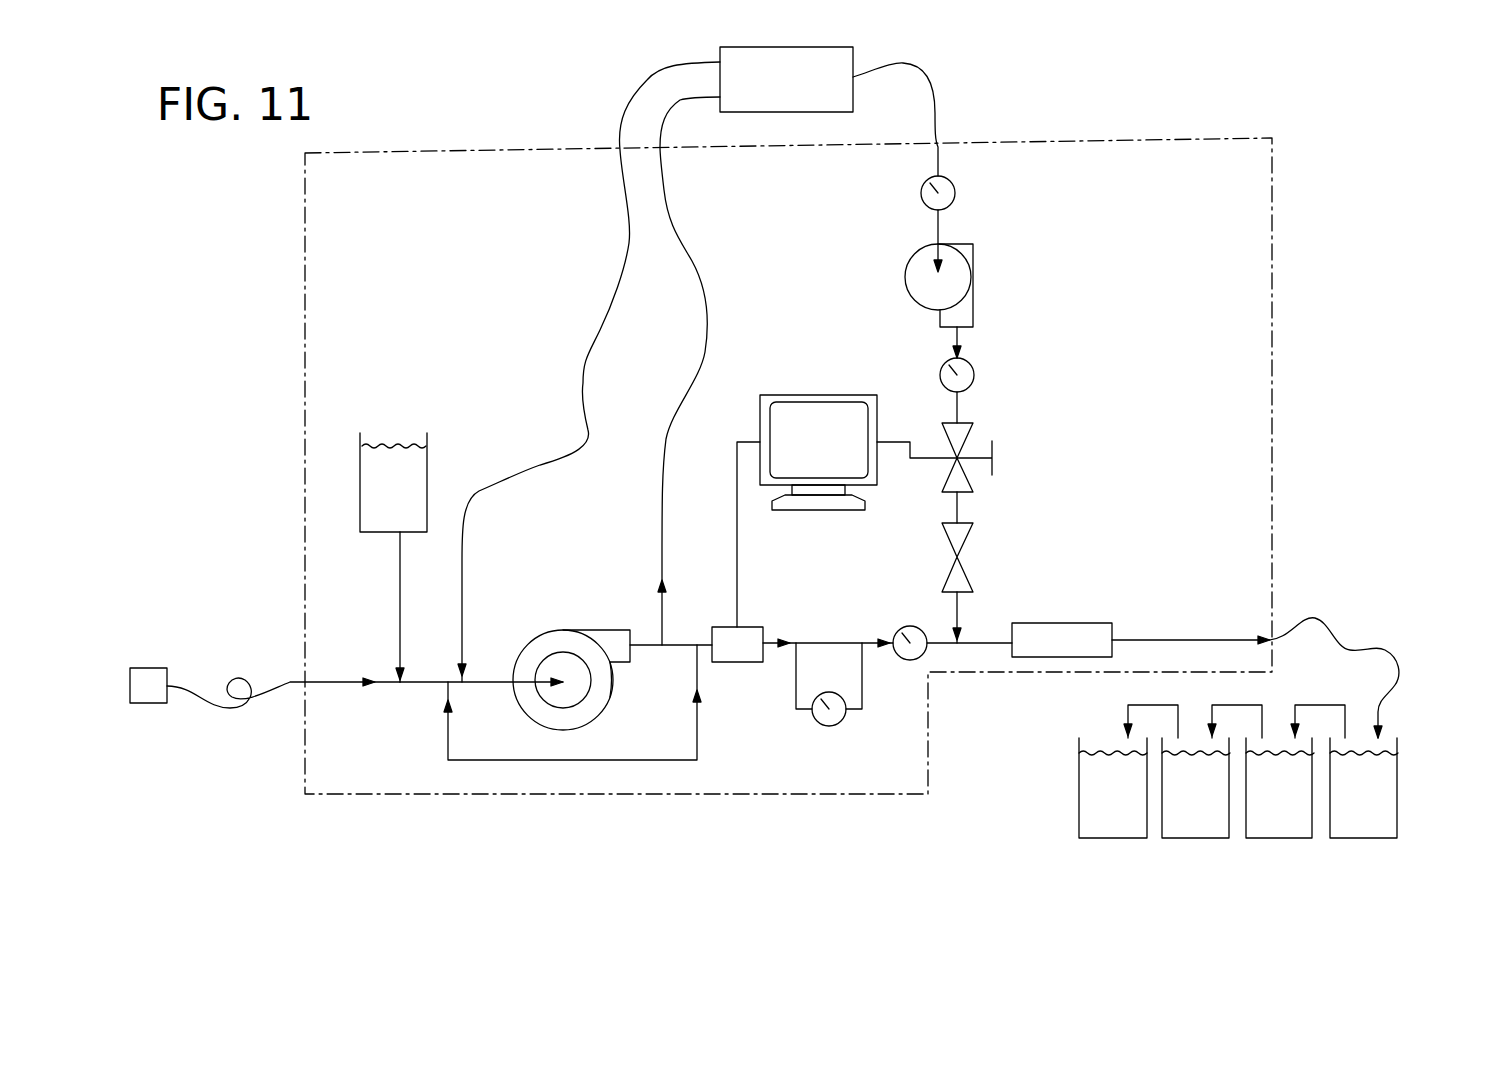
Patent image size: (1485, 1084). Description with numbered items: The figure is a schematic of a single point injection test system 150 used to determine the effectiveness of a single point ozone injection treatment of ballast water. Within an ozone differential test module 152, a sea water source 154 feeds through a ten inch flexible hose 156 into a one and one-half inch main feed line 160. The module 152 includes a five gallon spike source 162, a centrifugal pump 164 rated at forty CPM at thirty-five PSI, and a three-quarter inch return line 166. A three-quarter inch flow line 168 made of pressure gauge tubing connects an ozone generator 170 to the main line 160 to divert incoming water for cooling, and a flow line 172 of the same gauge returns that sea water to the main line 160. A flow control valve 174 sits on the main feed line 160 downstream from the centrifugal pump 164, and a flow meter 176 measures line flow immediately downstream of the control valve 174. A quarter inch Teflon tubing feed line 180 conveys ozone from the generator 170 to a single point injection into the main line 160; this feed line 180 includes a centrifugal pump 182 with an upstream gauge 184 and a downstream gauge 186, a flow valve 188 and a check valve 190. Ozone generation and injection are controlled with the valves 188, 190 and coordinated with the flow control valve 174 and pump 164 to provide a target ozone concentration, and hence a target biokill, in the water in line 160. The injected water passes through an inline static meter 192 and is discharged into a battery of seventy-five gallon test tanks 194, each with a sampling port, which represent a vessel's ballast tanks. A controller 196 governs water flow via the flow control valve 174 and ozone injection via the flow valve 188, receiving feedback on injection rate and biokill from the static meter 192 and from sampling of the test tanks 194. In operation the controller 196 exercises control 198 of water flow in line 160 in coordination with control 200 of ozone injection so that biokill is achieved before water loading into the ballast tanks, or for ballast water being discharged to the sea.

The single point injection test system 150 is at (1110, 117).
The ozone differential test module 152 is at (1272, 237).
The sea water source 154 is at (148, 703).
The flexible hose 156 is at (290, 682).
The main feed line 160 is at (388, 684).
The spike source 162 is at (360, 488).
The centrifugal pump 164 is at (568, 630).
The return line 166 is at (696, 738).
The flow line 168 is at (616, 291).
The ozone generator 170 is at (768, 91).
The flow line 172 is at (701, 261).
The flow control valve 174 is at (722, 627).
The flow meter 176 is at (840, 722).
The feed line 180 is at (938, 230).
The centrifugal pump 182 is at (973, 305).
The upstream gauge 184 is at (955, 190).
The downstream gauge 186 is at (974, 375).
The flow valve 188 is at (975, 432).
The check valve 190 is at (975, 530).
The inline static meter 192 is at (1068, 623).
The test tanks 194 is at (1180, 773).
The controller 196 is at (798, 395).
The control of line water flow 198 is at (737, 558).
The control of ozone injection 200 is at (897, 442).